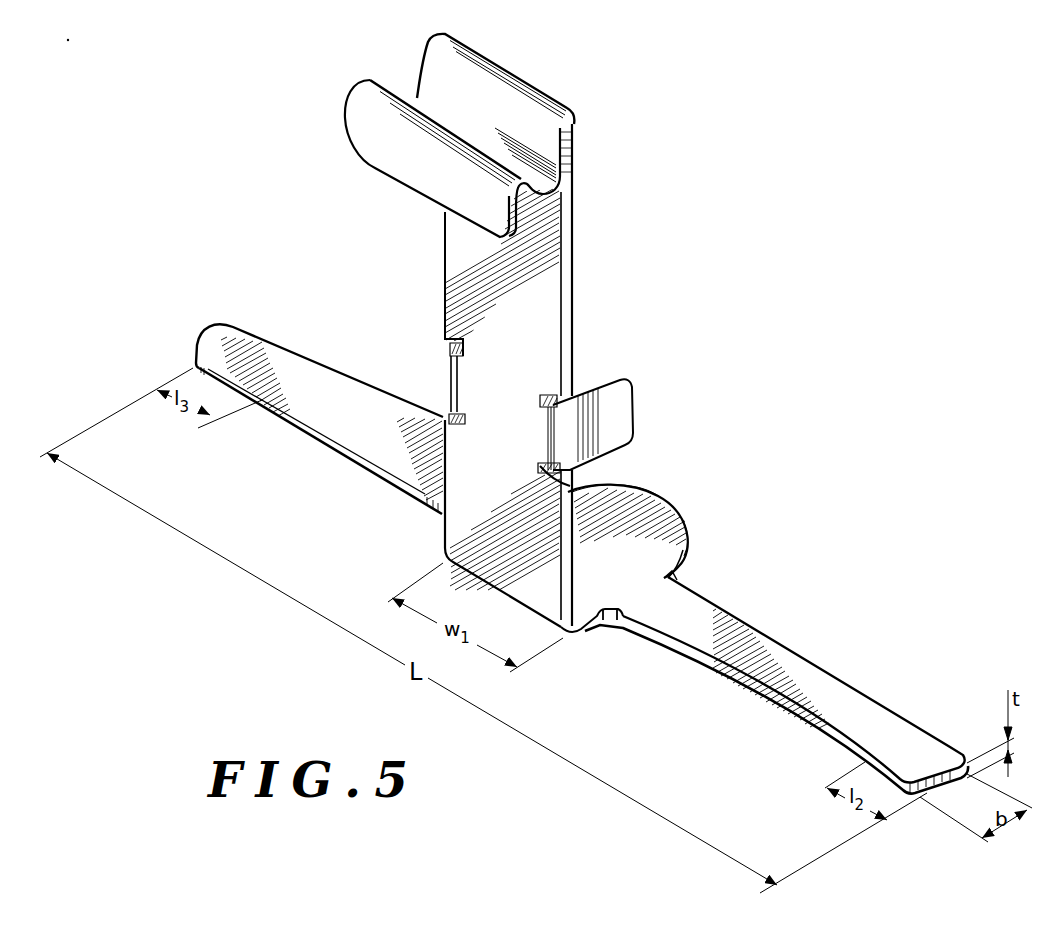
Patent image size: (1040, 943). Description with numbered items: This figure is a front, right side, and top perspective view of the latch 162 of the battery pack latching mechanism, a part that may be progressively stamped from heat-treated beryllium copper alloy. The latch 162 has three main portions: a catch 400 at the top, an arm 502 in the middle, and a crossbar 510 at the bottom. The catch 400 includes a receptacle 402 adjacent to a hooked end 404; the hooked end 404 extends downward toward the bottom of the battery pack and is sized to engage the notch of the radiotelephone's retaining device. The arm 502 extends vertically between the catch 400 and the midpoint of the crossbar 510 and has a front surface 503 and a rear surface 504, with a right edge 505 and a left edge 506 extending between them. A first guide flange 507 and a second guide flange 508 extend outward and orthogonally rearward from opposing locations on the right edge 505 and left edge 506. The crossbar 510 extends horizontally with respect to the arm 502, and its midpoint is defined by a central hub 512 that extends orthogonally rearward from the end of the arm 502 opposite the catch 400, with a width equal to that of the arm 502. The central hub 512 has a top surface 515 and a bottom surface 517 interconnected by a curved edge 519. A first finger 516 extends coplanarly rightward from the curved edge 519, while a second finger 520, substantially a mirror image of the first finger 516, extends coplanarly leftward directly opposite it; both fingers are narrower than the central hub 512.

The latch 162 is at (758, 89).
The catch 400 is at (340, 66).
The receptacle 402 is at (477, 92).
The hooked end 404 is at (363, 140).
The arm 502 is at (587, 208).
The front surface 503 is at (540, 291).
The rear surface 504 is at (570, 367).
The right edge 505 is at (567, 332).
The left edge 506 is at (445, 277).
The first guide flange 507 is at (622, 413).
The second guide flange 508 is at (450, 363).
The crossbar 510 is at (724, 570).
The central hub 512 is at (702, 501).
The top surface 515 is at (650, 510).
The first finger 516 is at (852, 700).
The bottom surface 517 is at (677, 578).
The curved edge 519 is at (683, 550).
The second finger 520 is at (298, 377).